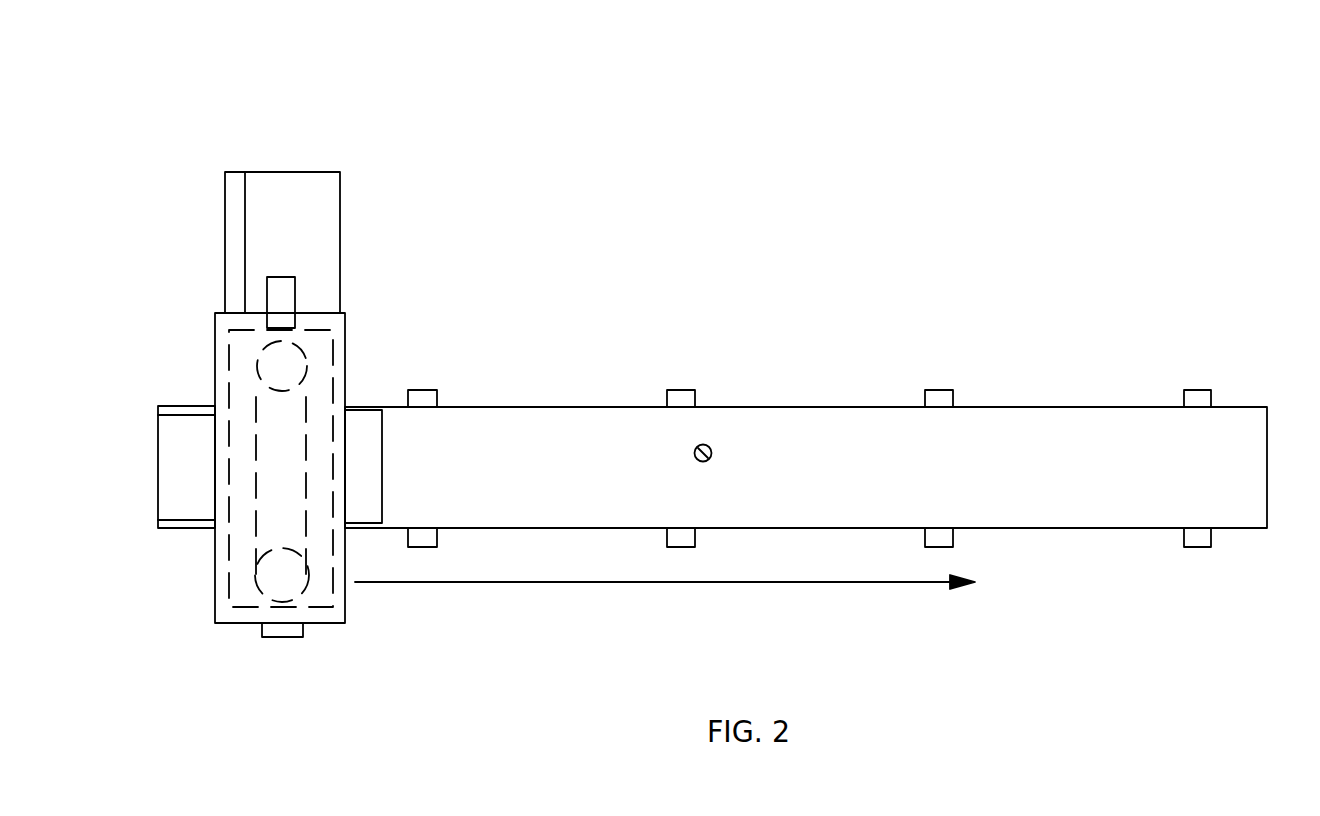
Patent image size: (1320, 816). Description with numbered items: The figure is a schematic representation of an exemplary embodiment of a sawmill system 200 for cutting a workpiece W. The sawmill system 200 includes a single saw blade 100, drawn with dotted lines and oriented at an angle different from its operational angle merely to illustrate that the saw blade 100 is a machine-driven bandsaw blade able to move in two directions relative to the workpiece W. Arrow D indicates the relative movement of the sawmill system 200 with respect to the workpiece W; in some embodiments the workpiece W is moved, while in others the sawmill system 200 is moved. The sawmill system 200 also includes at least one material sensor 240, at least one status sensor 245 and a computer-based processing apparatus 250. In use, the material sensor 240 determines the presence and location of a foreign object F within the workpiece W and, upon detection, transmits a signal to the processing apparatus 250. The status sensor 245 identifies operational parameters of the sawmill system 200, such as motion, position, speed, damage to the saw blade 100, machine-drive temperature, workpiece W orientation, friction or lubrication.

The sawmill system 200 is at (461, 127).
The saw blade 100 is at (310, 410).
The material sensor 240 is at (381, 471).
The status sensor 245 is at (277, 277).
The computer-based processing apparatus 250 is at (226, 212).
The workpiece W is at (1045, 448).
The foreign object F is at (710, 446).
The arrow indicating relative movement D is at (665, 597).